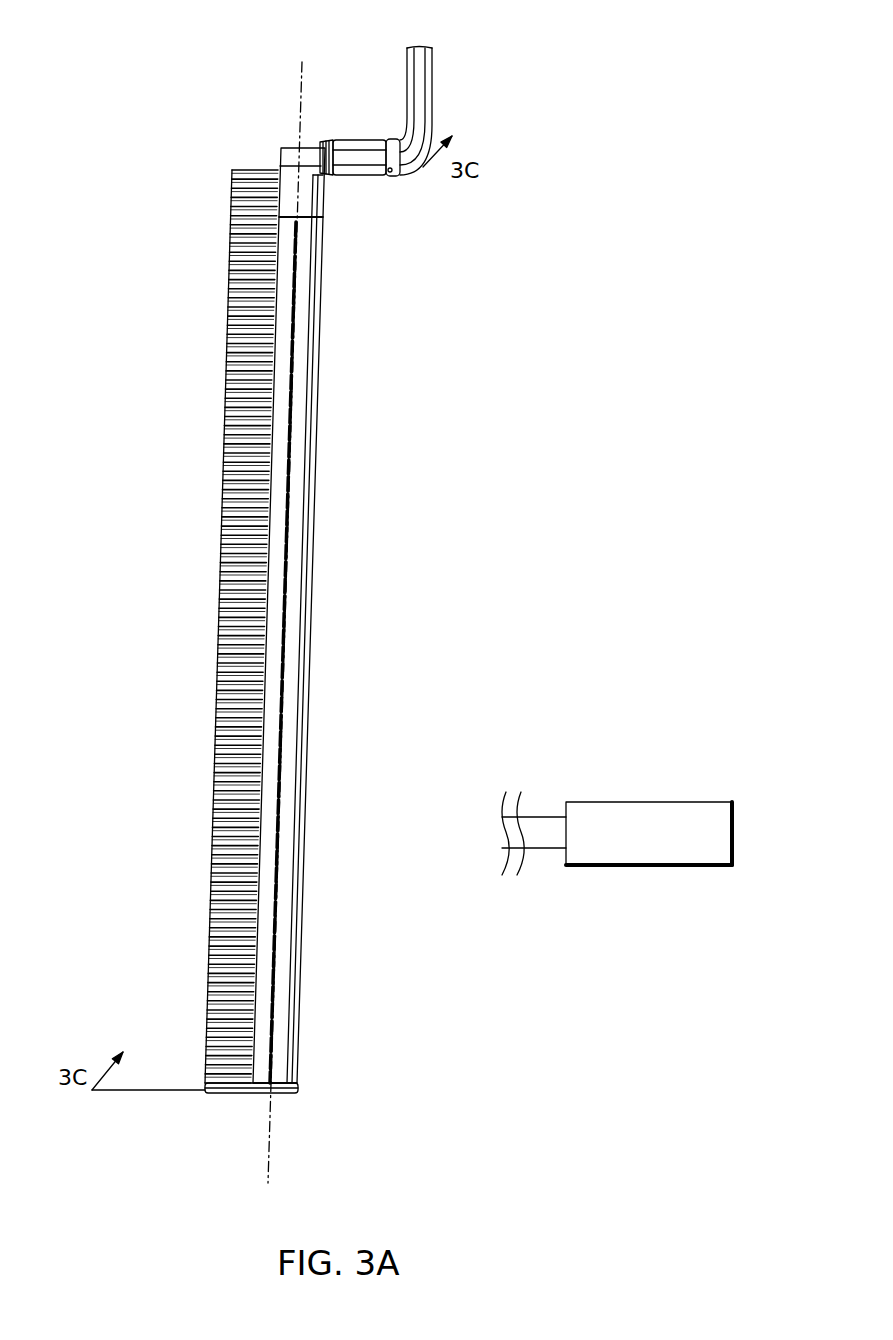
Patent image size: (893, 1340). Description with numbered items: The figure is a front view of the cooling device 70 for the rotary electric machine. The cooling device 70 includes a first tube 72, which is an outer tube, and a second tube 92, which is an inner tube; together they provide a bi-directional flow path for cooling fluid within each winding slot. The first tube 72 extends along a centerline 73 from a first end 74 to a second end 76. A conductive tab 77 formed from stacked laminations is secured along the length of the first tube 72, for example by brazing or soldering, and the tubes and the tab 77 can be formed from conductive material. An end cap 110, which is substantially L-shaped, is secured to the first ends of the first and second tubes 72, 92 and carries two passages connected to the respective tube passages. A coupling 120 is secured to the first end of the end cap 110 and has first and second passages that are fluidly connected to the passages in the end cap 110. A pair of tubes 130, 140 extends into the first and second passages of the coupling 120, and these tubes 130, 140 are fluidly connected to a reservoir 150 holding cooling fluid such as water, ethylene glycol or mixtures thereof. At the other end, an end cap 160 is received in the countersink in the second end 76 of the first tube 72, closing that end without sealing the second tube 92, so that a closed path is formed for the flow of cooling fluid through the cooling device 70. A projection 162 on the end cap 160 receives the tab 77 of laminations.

The cooling device 70 is at (331, 773).
The first tube 72 is at (315, 448).
The centerline 73 is at (270, 1160).
The first end 74 is at (340, 287).
The second end 76 is at (316, 1086).
The conductive tab 77 is at (240, 672).
The second tube 92 is at (292, 657).
The end cap 110 is at (278, 150).
The coupling 120 is at (360, 140).
The tube 130 is at (405, 170).
The tube 140 is at (431, 48).
The reservoir 150 is at (648, 802).
The end cap 160 is at (298, 1093).
The projection 162 is at (228, 1097).